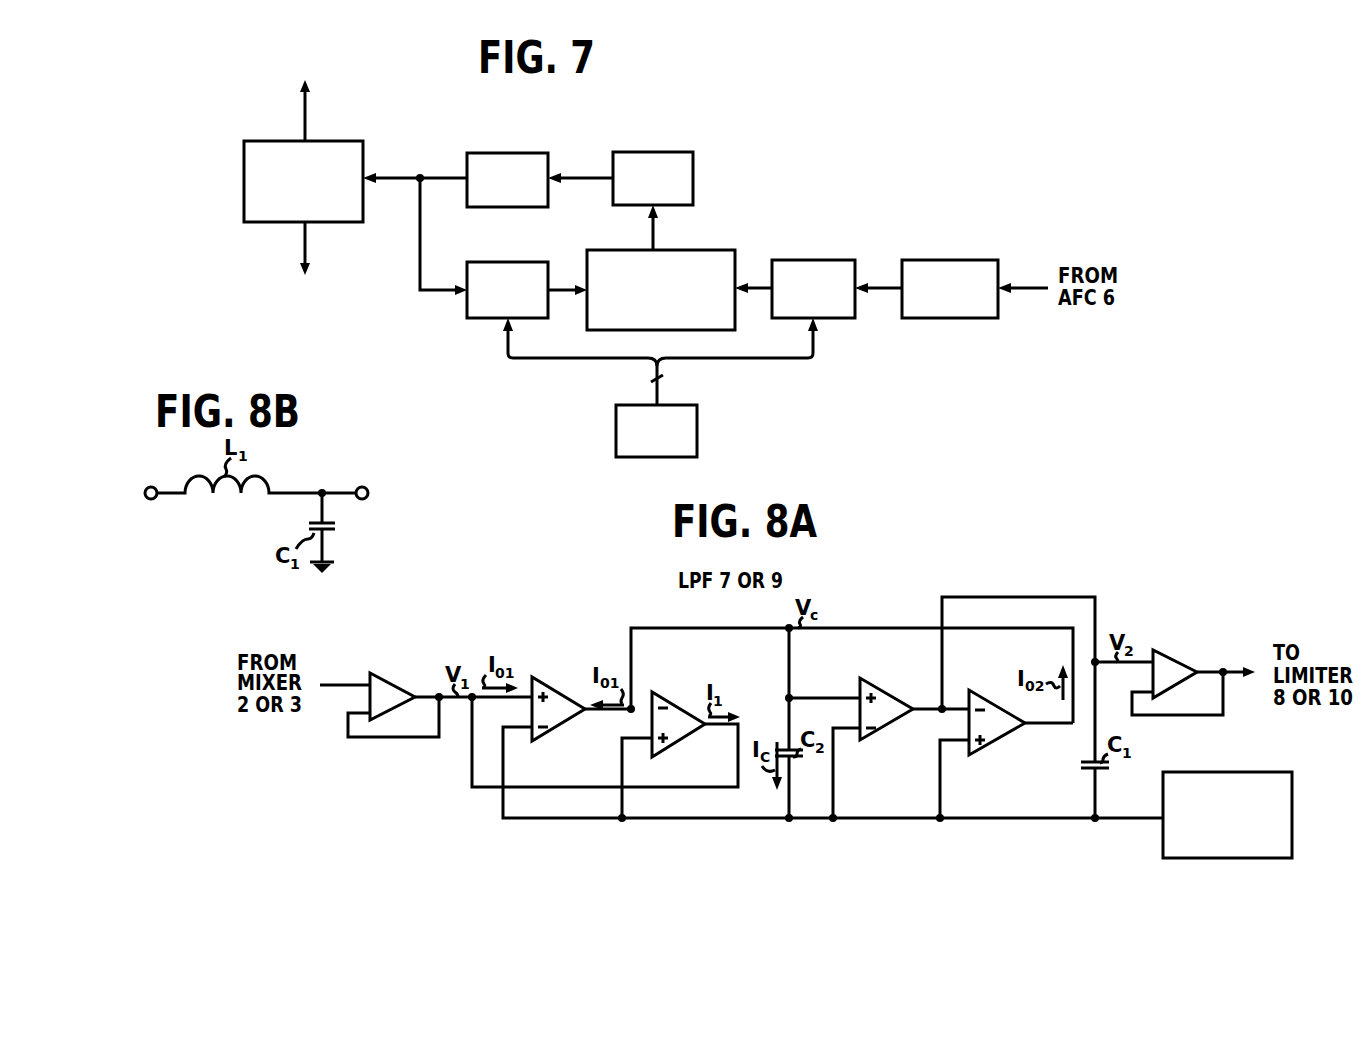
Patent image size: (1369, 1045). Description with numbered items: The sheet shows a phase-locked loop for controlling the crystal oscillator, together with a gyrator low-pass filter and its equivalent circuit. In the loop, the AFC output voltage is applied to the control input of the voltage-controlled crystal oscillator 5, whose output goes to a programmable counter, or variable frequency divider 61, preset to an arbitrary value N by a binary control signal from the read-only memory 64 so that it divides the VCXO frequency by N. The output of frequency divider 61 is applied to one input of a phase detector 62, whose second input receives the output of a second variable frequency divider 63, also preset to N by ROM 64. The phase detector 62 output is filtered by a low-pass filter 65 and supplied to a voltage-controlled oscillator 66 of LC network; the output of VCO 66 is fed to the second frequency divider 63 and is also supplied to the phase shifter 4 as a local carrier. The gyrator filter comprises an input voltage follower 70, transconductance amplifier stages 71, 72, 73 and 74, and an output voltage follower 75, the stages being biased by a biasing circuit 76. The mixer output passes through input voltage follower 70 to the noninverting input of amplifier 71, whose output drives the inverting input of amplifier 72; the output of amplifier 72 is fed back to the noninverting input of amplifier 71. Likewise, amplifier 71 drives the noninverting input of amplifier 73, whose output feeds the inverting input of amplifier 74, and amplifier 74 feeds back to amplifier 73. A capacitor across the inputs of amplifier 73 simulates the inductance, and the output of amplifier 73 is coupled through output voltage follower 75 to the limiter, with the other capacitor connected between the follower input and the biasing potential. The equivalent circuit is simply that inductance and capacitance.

In FIG. 7, the phase shifter 4 is at (323, 141).
In FIG. 7, the voltage-controlled crystal oscillator 5 is at (941, 260).
In FIG. 7, the variable frequency divider 61 is at (814, 260).
In FIG. 7, the phase detector 62 is at (709, 250).
In FIG. 7, the second variable frequency divider 63 is at (515, 262).
In FIG. 7, the read-only memory 64 is at (682, 405).
In FIG. 7, the low-pass filter 65 is at (650, 152).
In FIG. 7, the voltage-controlled oscillator 66 is at (503, 153).
In FIG. 8A, the input voltage follower 70 is at (375, 673).
In FIG. 8A, the transconductance amplifier stage 71 is at (548, 678).
In FIG. 8A, the transconductance amplifier stage 72 is at (665, 692).
In FIG. 8A, the transconductance amplifier stage 73 is at (891, 691).
In FIG. 8A, the transconductance amplifier stage 74 is at (981, 691).
In FIG. 8A, the output voltage follower 75 is at (1156, 650).
In FIG. 8A, the biasing circuit 76 is at (1222, 772).